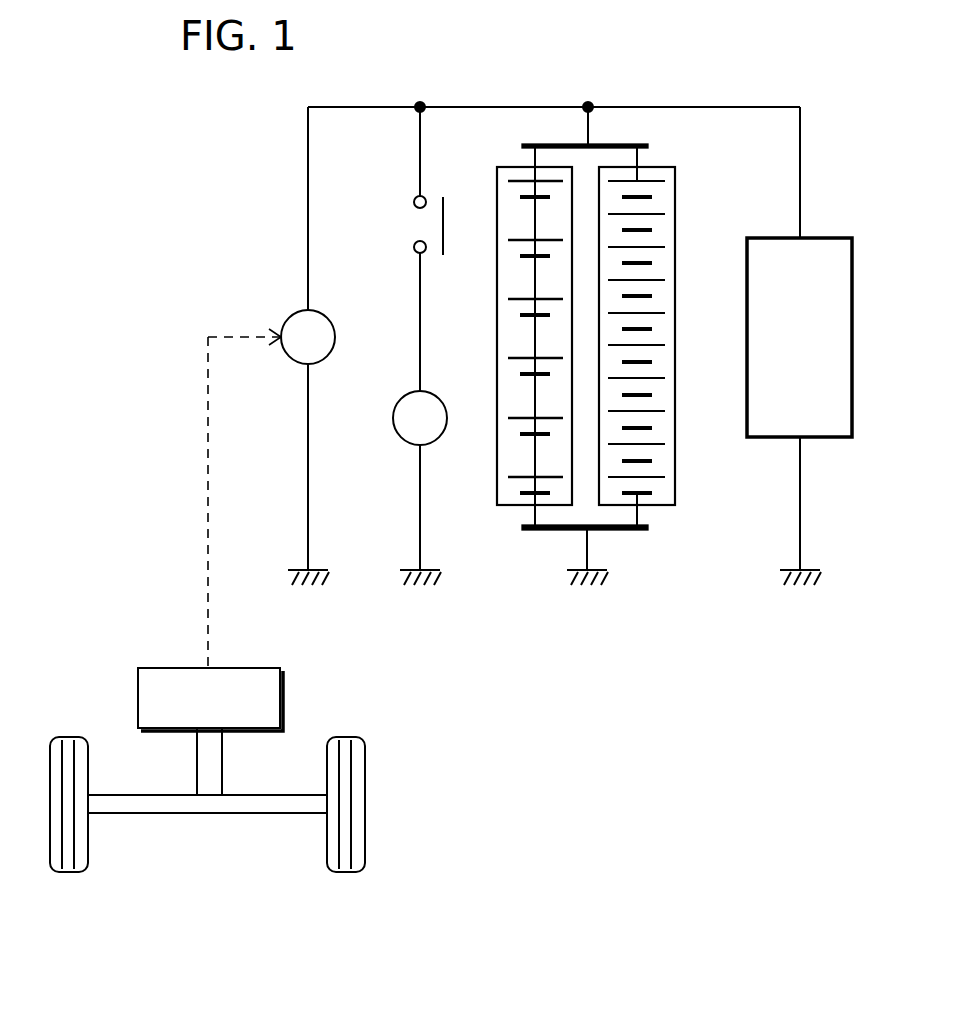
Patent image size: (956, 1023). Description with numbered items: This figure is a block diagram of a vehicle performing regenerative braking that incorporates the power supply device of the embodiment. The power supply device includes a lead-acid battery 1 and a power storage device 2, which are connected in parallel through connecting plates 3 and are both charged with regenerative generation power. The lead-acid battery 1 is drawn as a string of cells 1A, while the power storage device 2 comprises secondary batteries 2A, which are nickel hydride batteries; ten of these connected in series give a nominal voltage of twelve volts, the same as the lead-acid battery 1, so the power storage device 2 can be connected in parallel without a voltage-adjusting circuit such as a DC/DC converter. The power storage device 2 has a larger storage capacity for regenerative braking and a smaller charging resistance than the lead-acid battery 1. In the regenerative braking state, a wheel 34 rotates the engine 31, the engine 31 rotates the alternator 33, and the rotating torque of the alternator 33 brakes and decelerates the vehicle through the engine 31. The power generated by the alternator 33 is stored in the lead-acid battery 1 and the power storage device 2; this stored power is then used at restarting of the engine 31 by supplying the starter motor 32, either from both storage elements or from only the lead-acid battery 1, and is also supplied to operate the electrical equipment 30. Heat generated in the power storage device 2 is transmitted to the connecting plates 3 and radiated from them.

The lead-acid battery 1 is at (497, 258).
The battery cell of first battery 1A is at (510, 177).
The power storage device 2 is at (675, 262).
The secondary batteries 2A is at (660, 183).
The connecting plates 3 is at (619, 144).
The electrical equipment 30 is at (816, 238).
The engine 31 is at (258, 668).
The starter motor 32 is at (442, 400).
The alternator 33 is at (325, 315).
The wheel 34 is at (347, 737).